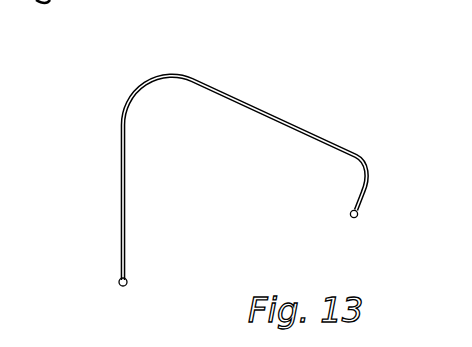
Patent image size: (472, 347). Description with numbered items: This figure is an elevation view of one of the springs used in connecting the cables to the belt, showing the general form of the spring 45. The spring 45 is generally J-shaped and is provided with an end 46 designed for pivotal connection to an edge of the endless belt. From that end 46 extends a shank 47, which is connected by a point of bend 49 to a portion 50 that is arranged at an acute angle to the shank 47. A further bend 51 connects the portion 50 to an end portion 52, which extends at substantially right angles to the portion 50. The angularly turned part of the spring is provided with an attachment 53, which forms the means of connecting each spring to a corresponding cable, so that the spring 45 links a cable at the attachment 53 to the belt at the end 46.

The spring 45 is at (116, 138).
The end 46 is at (117, 283).
The shank 47 is at (120, 206).
The point of bend 49 is at (147, 80).
The portion 50 is at (281, 115).
The bend 51 is at (371, 172).
The end portion 52 is at (364, 200).
The attachment 53 is at (355, 222).